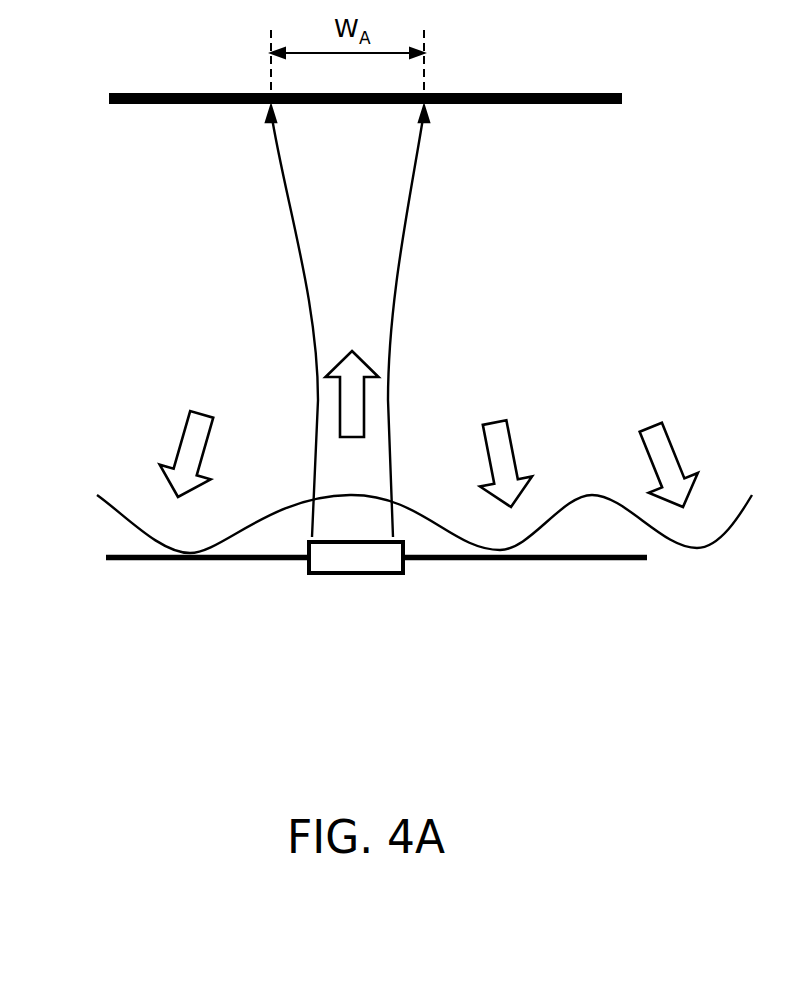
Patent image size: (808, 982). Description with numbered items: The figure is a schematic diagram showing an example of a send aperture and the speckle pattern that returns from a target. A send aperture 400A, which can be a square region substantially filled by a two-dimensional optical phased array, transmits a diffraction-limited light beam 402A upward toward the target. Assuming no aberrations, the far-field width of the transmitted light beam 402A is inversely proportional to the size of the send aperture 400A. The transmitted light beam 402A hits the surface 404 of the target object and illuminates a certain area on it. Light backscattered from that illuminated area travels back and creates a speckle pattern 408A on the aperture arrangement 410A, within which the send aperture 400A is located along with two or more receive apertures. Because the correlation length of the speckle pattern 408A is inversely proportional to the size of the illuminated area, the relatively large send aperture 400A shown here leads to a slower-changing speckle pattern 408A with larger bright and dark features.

The surface 404 is at (508, 104).
The transmitted light beam 402A is at (378, 156).
The speckle pattern 408A is at (131, 461).
The aperture arrangement 410A is at (650, 673).
The send aperture 400A is at (368, 573).